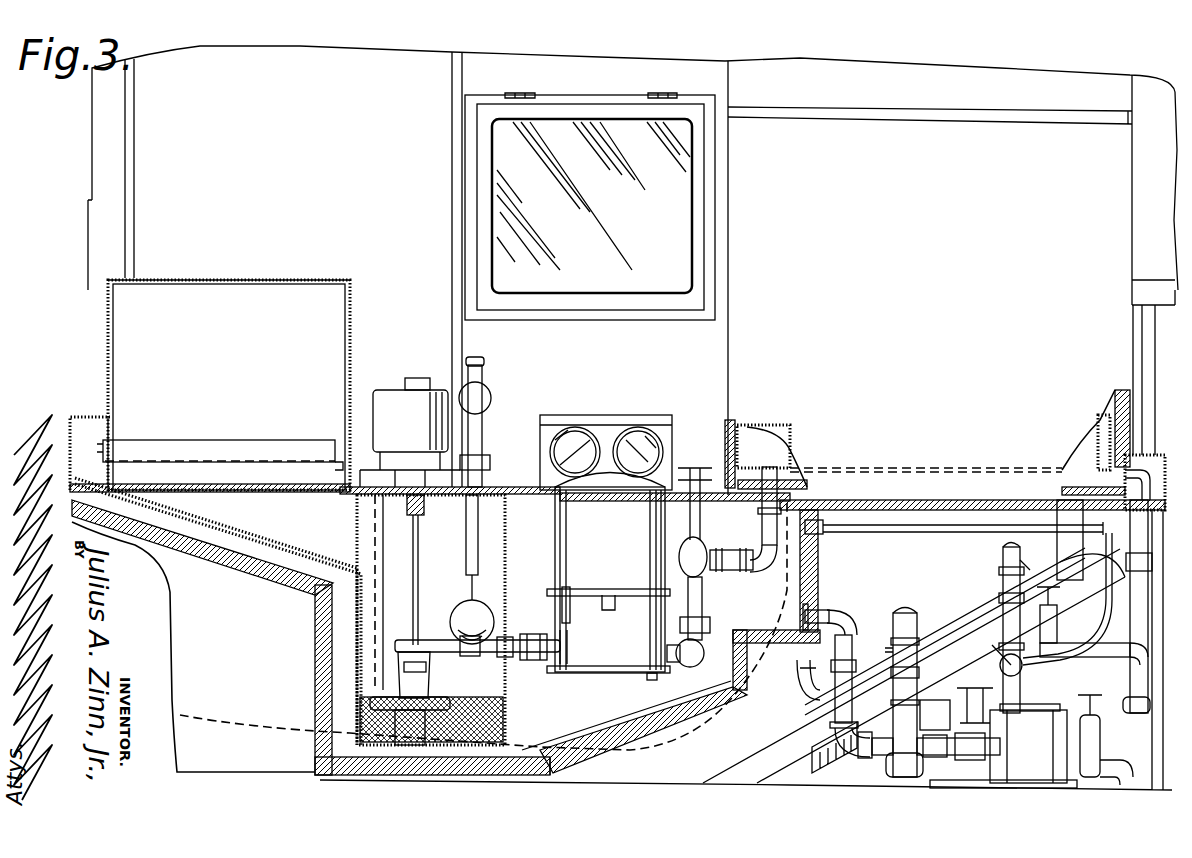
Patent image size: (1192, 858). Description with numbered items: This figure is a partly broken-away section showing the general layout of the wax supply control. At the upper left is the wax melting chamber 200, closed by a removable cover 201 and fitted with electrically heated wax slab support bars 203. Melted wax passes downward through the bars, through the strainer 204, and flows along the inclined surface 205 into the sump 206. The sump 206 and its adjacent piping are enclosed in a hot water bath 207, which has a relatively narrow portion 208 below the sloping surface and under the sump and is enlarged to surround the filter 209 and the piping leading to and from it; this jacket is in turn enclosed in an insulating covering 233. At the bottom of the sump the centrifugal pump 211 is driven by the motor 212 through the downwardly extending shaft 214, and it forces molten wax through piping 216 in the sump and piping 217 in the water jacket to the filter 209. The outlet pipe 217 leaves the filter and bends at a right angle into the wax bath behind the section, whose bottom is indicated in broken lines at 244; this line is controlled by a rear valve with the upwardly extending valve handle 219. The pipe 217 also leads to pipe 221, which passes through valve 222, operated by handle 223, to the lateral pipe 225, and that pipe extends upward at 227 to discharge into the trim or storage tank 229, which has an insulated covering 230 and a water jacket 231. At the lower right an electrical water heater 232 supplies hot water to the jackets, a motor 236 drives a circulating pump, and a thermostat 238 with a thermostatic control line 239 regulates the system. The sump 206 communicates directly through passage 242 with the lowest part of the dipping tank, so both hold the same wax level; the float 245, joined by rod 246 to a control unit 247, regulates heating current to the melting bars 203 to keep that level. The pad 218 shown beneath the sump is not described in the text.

The wax melting chamber 200 is at (240, 347).
The removable cover 201 is at (246, 280).
The electrically heated wax slab support bars 203 is at (174, 448).
The strainer 204 is at (256, 474).
The inclined surface 205 is at (276, 540).
The sump 206 is at (490, 686).
The hot water bath 207 is at (552, 724).
The narrow portion of water jacket 208 is at (288, 562).
The filter 209 is at (576, 560).
The centrifugal pump 211 is at (368, 703).
The motor 212 is at (394, 420).
The downwardly extending shaft 214 is at (415, 592).
The piping in the sump 216 is at (395, 647).
The outlet pipe 217 is at (536, 636).
The pad 218 is at (508, 720).
The valve handle 219 is at (698, 467).
The pipe 221 is at (705, 612).
The valve 222 is at (702, 557).
The handle 223 is at (672, 470).
The lateral pipe 225 is at (818, 590).
The upward extension of lateral pipe 227 is at (773, 470).
The trim or storage tank 229 is at (936, 276).
The insulated covering 230 is at (728, 430).
The water jacket 231 is at (756, 428).
The electrical water heater 232 is at (927, 643).
The insulating covering 233 is at (206, 548).
The motor 236 is at (1035, 730).
The thermostat 238 is at (823, 531).
The thermostatic control line 239 is at (1066, 588).
The passage 242 is at (460, 698).
The outline of wax bath 244 is at (212, 722).
The float 245 is at (460, 612).
The rod 246 is at (480, 597).
The control unit 247 is at (480, 467).